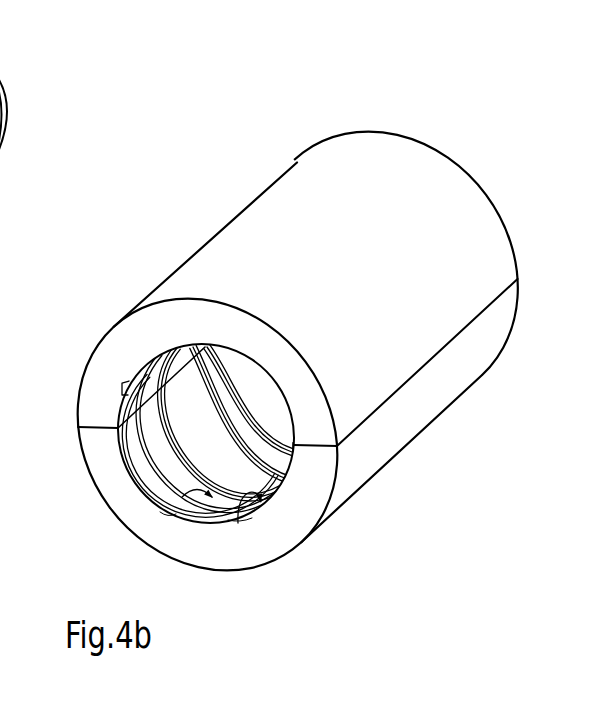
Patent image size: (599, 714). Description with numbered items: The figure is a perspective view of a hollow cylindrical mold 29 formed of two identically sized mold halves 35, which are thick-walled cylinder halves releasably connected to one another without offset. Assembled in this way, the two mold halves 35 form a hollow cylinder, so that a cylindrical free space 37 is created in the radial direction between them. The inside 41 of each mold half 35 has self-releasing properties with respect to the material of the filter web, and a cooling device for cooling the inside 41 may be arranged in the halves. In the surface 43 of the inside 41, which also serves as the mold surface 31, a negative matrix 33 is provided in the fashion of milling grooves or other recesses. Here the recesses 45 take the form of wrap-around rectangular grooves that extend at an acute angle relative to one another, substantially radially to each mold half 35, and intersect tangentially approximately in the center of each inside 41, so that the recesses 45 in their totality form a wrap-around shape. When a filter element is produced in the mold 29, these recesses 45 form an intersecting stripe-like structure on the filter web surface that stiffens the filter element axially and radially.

The hollow cylindrical mold 29 is at (433, 101).
The mold halves 35 is at (25, 72).
The cylindrical free space 37 is at (130, 385).
The recesses 45 is at (127, 449).
The surface 43 is at (285, 464).
The negative matrix 33 is at (192, 468).
The mold surface 31 is at (167, 507).
The inside 41 is at (238, 521).